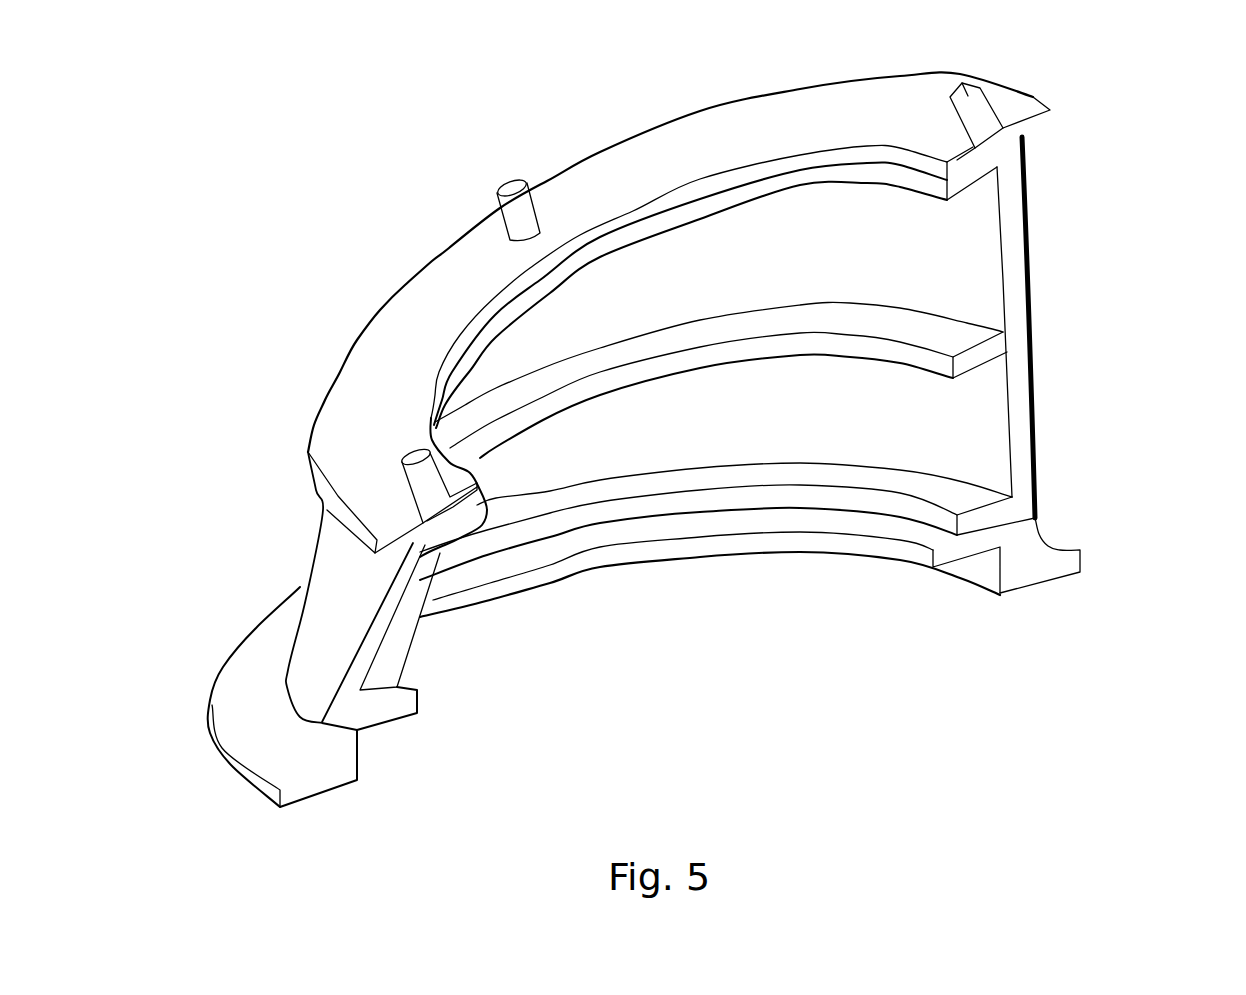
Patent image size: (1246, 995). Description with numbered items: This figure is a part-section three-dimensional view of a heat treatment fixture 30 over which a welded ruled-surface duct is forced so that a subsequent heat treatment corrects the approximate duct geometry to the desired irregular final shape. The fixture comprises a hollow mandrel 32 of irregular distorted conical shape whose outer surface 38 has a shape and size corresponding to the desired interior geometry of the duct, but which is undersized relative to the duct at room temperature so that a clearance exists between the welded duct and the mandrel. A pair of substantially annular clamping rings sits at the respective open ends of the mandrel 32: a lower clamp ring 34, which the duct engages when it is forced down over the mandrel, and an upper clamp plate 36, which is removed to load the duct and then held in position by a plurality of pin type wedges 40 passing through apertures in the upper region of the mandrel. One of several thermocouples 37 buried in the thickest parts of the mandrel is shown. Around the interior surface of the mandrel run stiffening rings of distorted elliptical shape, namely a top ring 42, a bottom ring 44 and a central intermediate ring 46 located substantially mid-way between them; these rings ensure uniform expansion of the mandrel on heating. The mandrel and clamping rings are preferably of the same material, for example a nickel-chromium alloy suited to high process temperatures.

The heat treatment fixture 30 is at (1150, 243).
The mandrel 32 is at (1013, 293).
The lower clamp ring 34 is at (1057, 543).
The upper clamp plate 36 is at (1010, 100).
The thermocouple 37 is at (308, 452).
The outer surface of the mandrel 38 is at (347, 567).
The pin type wedge 40 is at (527, 220).
The top ring 42 is at (877, 185).
The bottom ring 44 is at (900, 483).
The central intermediate ring 46 is at (855, 330).